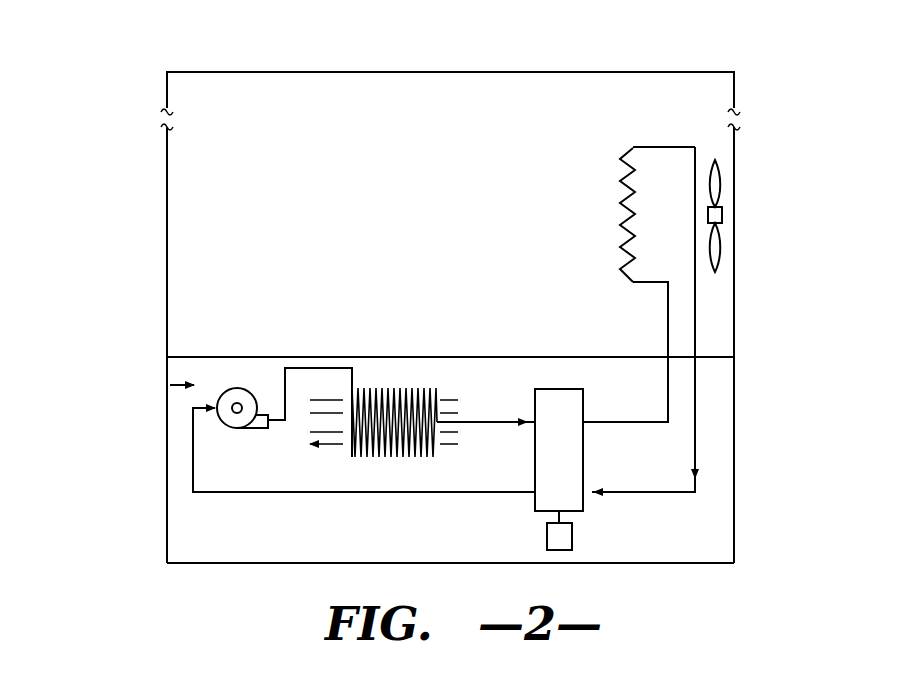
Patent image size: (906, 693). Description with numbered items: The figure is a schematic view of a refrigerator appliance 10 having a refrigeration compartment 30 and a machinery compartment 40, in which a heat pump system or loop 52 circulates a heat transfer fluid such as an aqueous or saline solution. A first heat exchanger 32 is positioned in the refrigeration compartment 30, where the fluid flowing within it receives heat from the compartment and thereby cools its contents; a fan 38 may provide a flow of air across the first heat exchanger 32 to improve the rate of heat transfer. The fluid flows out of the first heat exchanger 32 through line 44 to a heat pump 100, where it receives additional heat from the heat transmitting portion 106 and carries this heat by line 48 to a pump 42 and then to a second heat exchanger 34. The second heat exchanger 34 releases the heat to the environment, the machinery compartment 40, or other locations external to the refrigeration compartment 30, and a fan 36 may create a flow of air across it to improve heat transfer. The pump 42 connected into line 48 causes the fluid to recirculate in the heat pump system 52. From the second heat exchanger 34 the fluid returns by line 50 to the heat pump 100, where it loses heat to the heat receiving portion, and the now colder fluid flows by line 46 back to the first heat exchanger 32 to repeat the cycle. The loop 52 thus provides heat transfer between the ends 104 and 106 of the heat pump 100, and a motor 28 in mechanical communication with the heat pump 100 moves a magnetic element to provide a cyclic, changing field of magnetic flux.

The refrigerator appliance 10 is at (105, 162).
The motor 28 is at (547, 538).
The refrigeration compartment 30 is at (430, 106).
The first heat exchanger 32 is at (620, 188).
The second heat exchanger 34 is at (410, 390).
The fan 36 is at (335, 400).
The fan 38 is at (718, 185).
The machinery compartment 40 is at (175, 385).
The pump 42 is at (230, 393).
The line 44 is at (695, 318).
The line 46 is at (668, 330).
The line 48 is at (292, 368).
The line 50 is at (478, 422).
The heat pump system 52 is at (366, 344).
The heat pump 100 is at (558, 389).
The end of heat pump 104 is at (583, 408).
The heat transmitting portion 106 is at (586, 500).